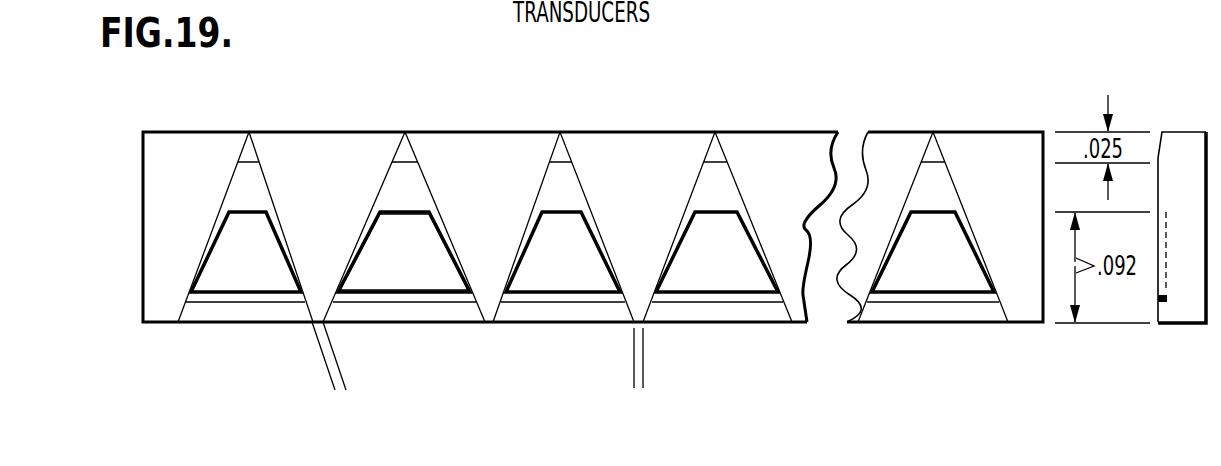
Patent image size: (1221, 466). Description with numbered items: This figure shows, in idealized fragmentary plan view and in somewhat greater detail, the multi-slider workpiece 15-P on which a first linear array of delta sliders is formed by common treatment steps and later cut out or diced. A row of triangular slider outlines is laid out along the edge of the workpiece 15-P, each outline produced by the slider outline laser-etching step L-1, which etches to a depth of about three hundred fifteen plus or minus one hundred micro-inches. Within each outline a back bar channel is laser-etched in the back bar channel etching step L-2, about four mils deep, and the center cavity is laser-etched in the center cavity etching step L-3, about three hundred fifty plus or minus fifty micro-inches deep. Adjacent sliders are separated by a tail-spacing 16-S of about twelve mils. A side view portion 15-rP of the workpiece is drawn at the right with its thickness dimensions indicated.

The slider outline laser-etching step L-1 is at (259, 151).
The back bar channel laser-etching step L-2 is at (262, 294).
The center cavity laser-etching step L-3 is at (404, 259).
The multi-slider workpiece 15-P is at (956, 87).
The transducer plate rear portion 15-rP is at (1176, 327).
The tail-spacing 16-S is at (575, 358).